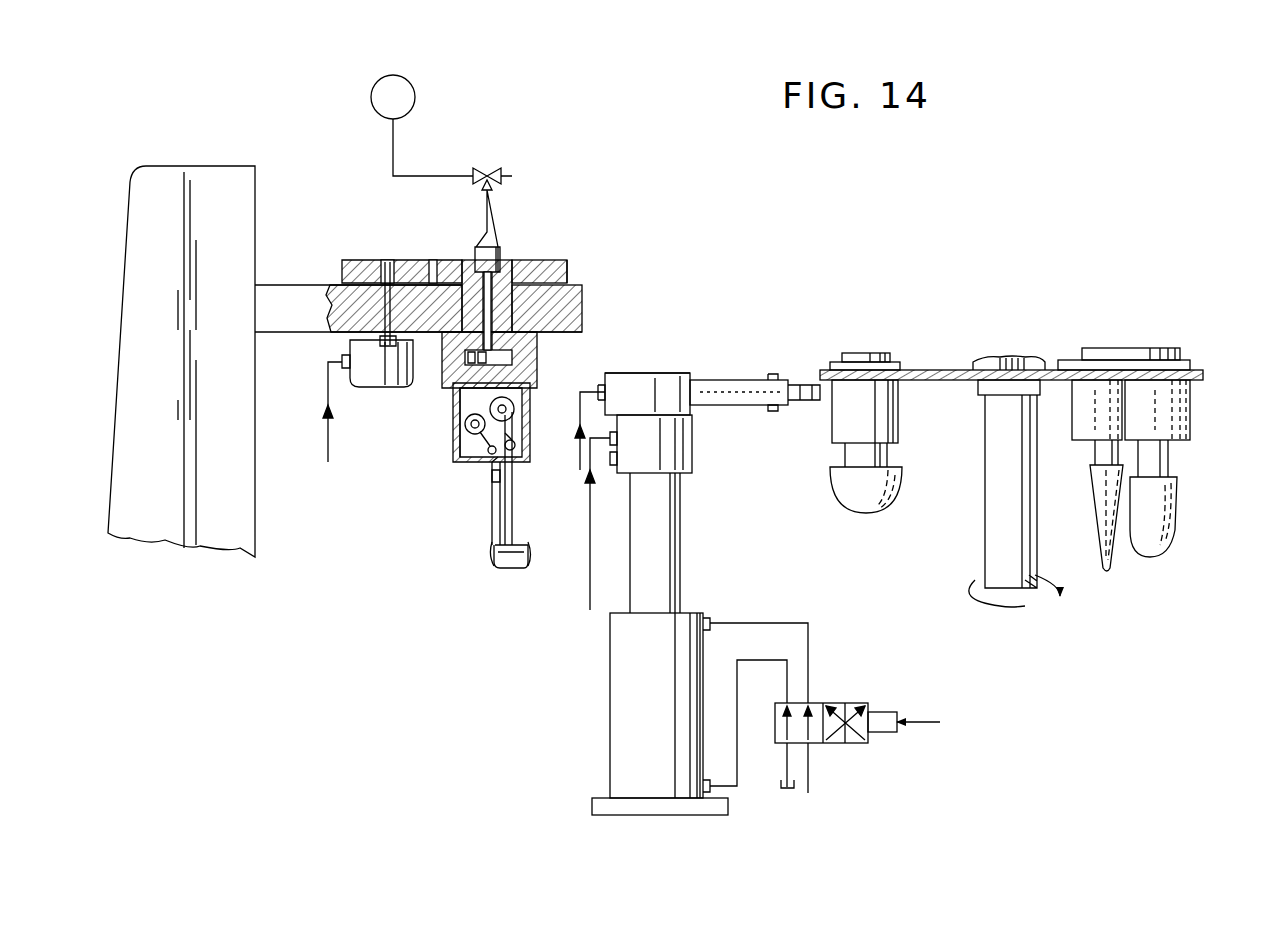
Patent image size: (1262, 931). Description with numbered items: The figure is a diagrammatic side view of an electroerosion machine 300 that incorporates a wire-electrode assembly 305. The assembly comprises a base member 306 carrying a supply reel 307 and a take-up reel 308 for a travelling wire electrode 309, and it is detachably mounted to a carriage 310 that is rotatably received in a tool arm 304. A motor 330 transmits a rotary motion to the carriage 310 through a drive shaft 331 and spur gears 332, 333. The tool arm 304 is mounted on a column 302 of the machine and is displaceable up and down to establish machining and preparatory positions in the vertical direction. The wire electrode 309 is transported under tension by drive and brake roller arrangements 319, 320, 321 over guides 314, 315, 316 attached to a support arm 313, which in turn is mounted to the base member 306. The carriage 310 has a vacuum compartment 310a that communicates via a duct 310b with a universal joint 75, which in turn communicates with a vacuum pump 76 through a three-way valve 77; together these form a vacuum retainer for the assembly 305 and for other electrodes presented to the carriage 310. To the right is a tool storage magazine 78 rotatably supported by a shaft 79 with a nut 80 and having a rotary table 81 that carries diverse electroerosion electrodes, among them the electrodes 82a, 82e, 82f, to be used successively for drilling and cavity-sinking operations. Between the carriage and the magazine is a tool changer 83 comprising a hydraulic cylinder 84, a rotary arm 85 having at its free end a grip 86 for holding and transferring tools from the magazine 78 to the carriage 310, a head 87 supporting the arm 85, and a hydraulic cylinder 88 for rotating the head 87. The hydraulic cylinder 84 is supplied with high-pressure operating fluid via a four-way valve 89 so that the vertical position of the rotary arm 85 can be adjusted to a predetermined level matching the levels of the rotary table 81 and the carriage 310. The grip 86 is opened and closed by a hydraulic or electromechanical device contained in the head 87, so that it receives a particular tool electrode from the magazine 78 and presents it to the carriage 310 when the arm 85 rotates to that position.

The universal joint 75 is at (500, 242).
The vacuum pump 76 is at (410, 92).
The three-way valve 77 is at (500, 160).
The tool storage magazine 78 is at (1110, 310).
The shaft 79 is at (990, 528).
The nut 80 is at (1012, 360).
The rotary table 81 is at (934, 370).
The electroerosion electrode 82a is at (858, 518).
The electroerosion electrode 82e is at (1180, 512).
The electroerosion electrode 82f is at (1107, 576).
The tool changer 83 is at (720, 308).
The hydraulic cylinder 84 is at (608, 702).
The rotary arm 85 is at (738, 383).
The grip 86 is at (800, 385).
The head 87 is at (665, 380).
The hydraulic cylinder 88 is at (692, 452).
The four-way valve 89 is at (868, 696).
The electroerosion machine 300 is at (438, 747).
The column 302 is at (252, 456).
The tool arm 304 is at (288, 286).
The wire-electrode assembly 305 is at (450, 452).
The base member 306 is at (458, 405).
The supply reel 307 is at (466, 428).
The take-up reel 308 is at (538, 388).
The travelling wire electrode 309 is at (495, 528).
The carriage 310 is at (546, 350).
The vacuum compartment 310a is at (584, 294).
The duct 310b is at (500, 275).
The support arm 313 is at (512, 520).
The guide 314 is at (530, 553).
The guide 315 is at (492, 492).
The guide 316 is at (492, 568).
The drive and brake roller arrangement 319 is at (522, 418).
The drive and brake roller arrangement 320 is at (515, 465).
The drive and brake roller arrangement 321 is at (482, 462).
The motor 330 is at (350, 346).
The drive shaft 331 is at (384, 262).
The spur gear 332 is at (406, 262).
The spur gear 333 is at (562, 262).